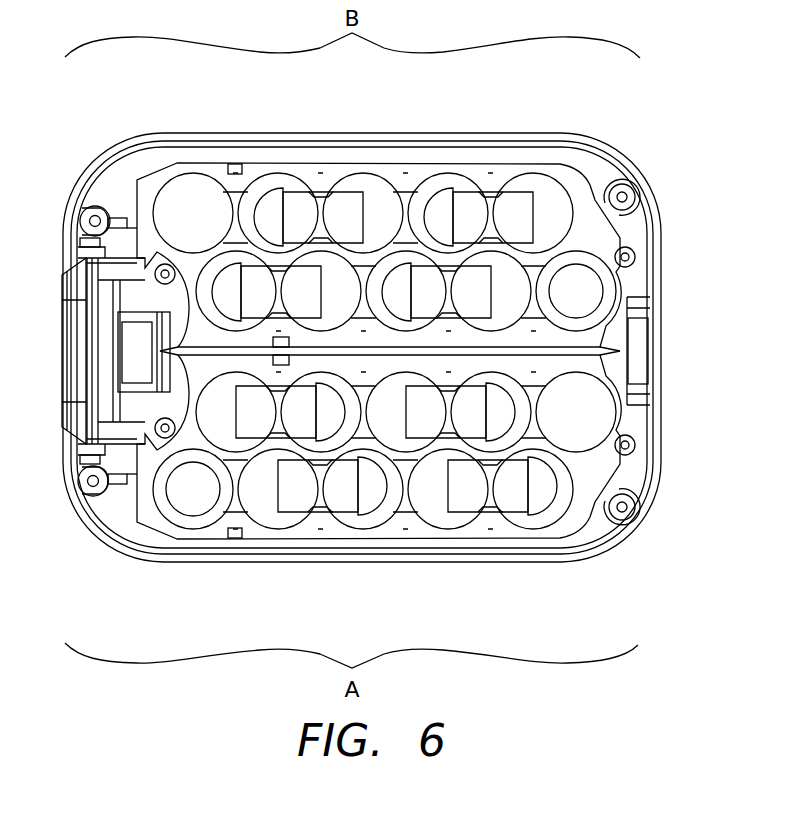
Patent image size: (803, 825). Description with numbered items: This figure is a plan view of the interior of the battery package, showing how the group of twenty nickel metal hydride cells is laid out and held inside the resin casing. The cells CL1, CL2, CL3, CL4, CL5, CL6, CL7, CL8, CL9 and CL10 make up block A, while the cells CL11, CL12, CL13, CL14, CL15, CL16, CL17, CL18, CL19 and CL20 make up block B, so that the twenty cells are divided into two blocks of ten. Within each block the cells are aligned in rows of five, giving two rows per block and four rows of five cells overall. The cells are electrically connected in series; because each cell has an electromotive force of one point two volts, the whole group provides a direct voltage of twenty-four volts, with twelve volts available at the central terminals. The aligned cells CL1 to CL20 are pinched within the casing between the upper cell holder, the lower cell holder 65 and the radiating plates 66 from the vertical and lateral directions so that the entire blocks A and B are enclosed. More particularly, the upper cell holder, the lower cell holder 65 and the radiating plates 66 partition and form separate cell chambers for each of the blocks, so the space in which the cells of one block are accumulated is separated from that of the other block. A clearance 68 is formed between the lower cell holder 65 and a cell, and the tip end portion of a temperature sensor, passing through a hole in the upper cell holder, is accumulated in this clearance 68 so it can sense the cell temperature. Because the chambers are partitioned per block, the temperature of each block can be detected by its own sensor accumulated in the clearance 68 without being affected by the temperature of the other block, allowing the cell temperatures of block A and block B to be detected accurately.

The cell CL1 is at (183, 517).
The cell CL2 is at (220, 445).
The cell CL3 is at (330, 445).
The cell CL4 is at (280, 523).
The cell CL5 is at (367, 520).
The cell CL6 is at (422, 443).
The cell CL7 is at (493, 443).
The cell CL8 is at (450, 520).
The cell CL9 is at (557, 510).
The cell CL10 is at (610, 410).
The cell CL11 is at (610, 290).
The cell CL12 is at (557, 180).
The cell CL13 is at (450, 180).
The cell CL14 is at (493, 257).
The cell CL15 is at (423, 257).
The cell CL16 is at (368, 183).
The cell CL17 is at (283, 182).
The cell CL18 is at (327, 258).
The cell CL19 is at (224, 262).
The cell CL20 is at (183, 192).
The lower cell holder 65 is at (598, 168).
The radiating plates 66 is at (137, 187).
The clearance 68 is at (118, 390).